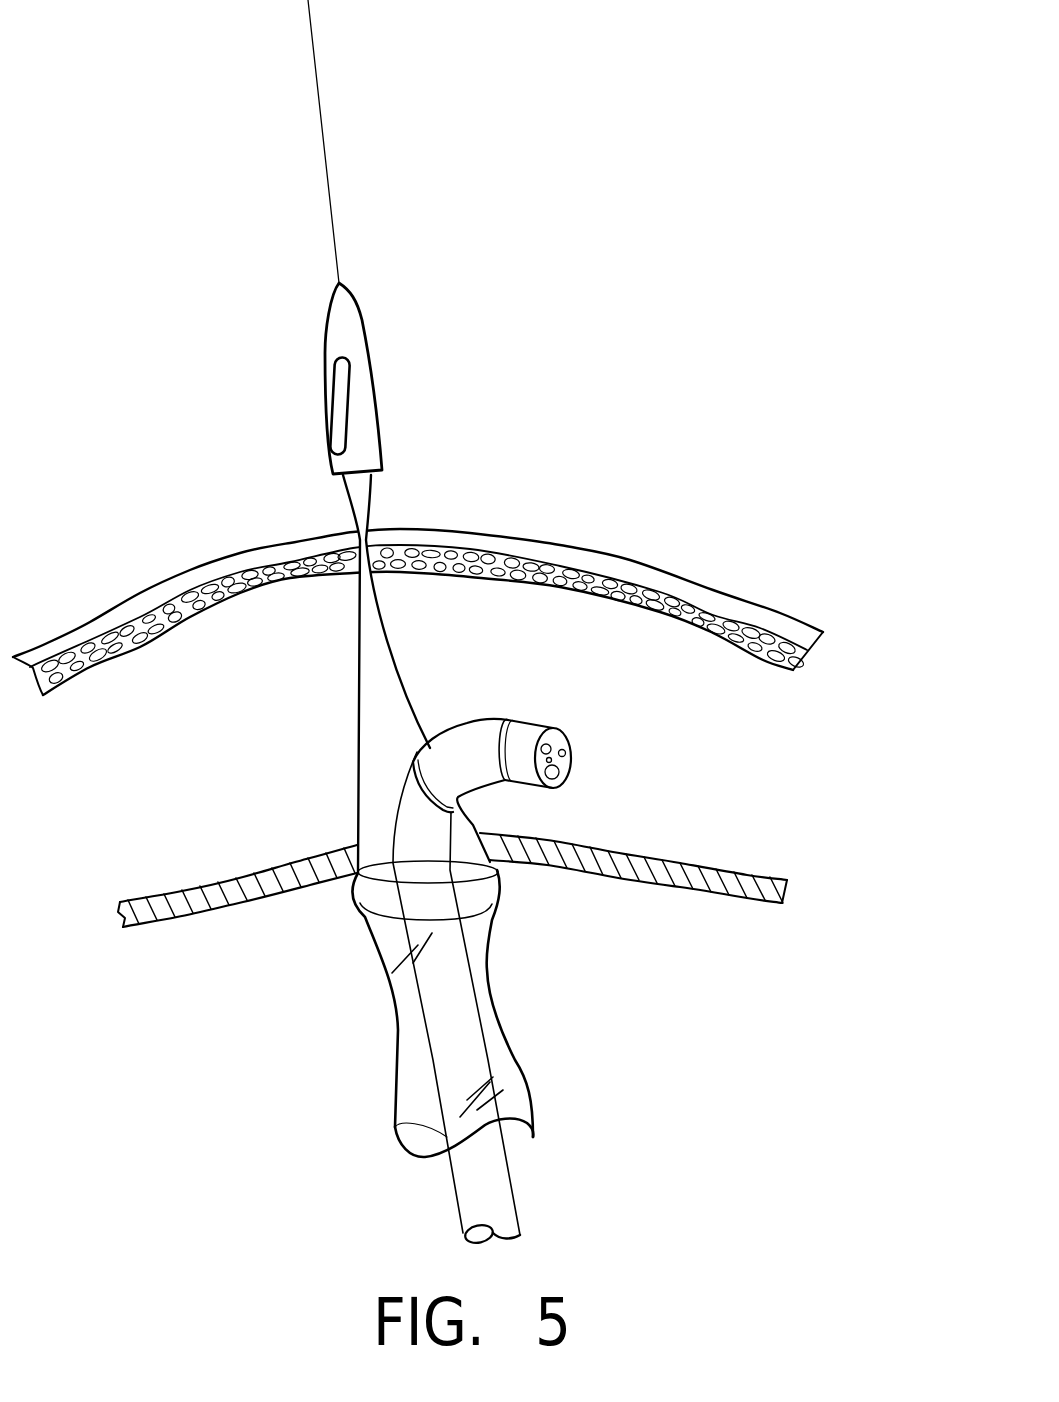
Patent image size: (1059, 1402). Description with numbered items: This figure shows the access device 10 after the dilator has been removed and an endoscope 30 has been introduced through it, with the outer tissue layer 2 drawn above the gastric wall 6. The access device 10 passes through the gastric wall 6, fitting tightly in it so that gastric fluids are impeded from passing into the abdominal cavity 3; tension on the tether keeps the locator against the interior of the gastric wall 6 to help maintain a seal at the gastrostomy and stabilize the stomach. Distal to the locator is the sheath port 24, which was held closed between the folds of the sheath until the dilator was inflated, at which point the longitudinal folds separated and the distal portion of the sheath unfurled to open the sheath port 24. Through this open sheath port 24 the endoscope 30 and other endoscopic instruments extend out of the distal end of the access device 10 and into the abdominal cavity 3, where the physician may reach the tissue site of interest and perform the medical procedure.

The skin 2 is at (618, 552).
The abdominal cavity 3 is at (259, 764).
The gastric wall 6 is at (618, 845).
The access device 10 is at (500, 622).
The sheath port 24 is at (427, 773).
The endoscope 30 is at (533, 720).